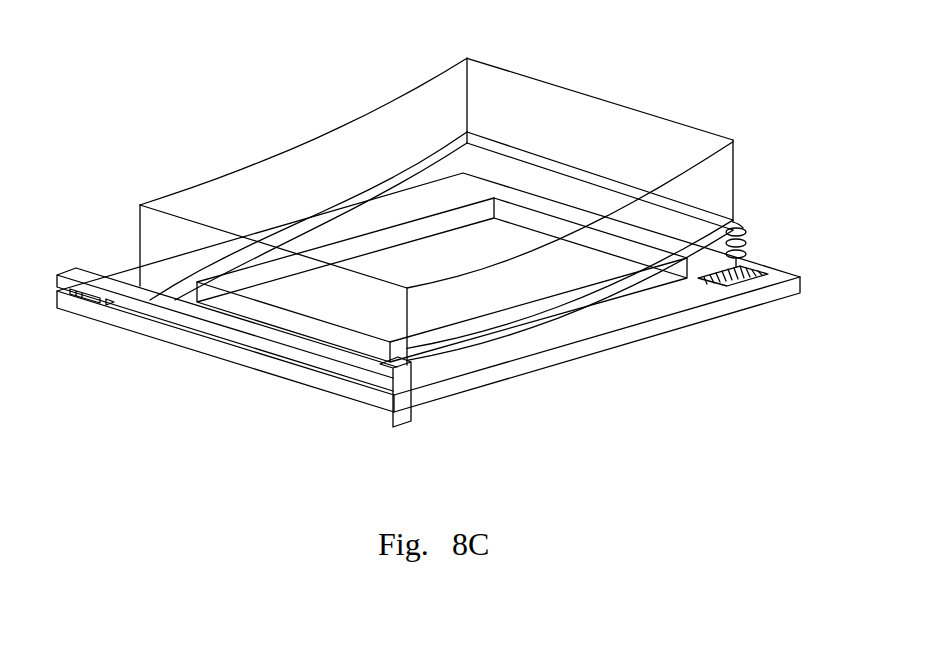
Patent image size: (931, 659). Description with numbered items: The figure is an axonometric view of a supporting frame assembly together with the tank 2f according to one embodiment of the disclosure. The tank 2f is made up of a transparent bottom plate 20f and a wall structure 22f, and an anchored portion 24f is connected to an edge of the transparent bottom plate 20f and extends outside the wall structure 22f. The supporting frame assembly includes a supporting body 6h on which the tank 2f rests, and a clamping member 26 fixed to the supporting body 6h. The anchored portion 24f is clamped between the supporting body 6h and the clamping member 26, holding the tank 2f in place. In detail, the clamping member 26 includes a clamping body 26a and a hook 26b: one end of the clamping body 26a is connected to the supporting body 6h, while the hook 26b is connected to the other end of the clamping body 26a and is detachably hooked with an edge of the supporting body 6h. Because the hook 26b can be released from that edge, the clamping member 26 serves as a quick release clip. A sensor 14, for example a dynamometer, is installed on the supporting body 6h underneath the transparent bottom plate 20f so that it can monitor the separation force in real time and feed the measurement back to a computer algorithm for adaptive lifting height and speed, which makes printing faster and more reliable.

The tank 2f is at (808, 96).
The wall structure 22f is at (733, 140).
The transparent bottom plate 20f is at (735, 216).
The sensor 14 is at (748, 265).
The supporting body 6h is at (636, 331).
The clamping member 26 is at (234, 379).
The clamping body 26a is at (205, 323).
The hook 26b is at (366, 414).
The anchored portion 24f is at (133, 310).